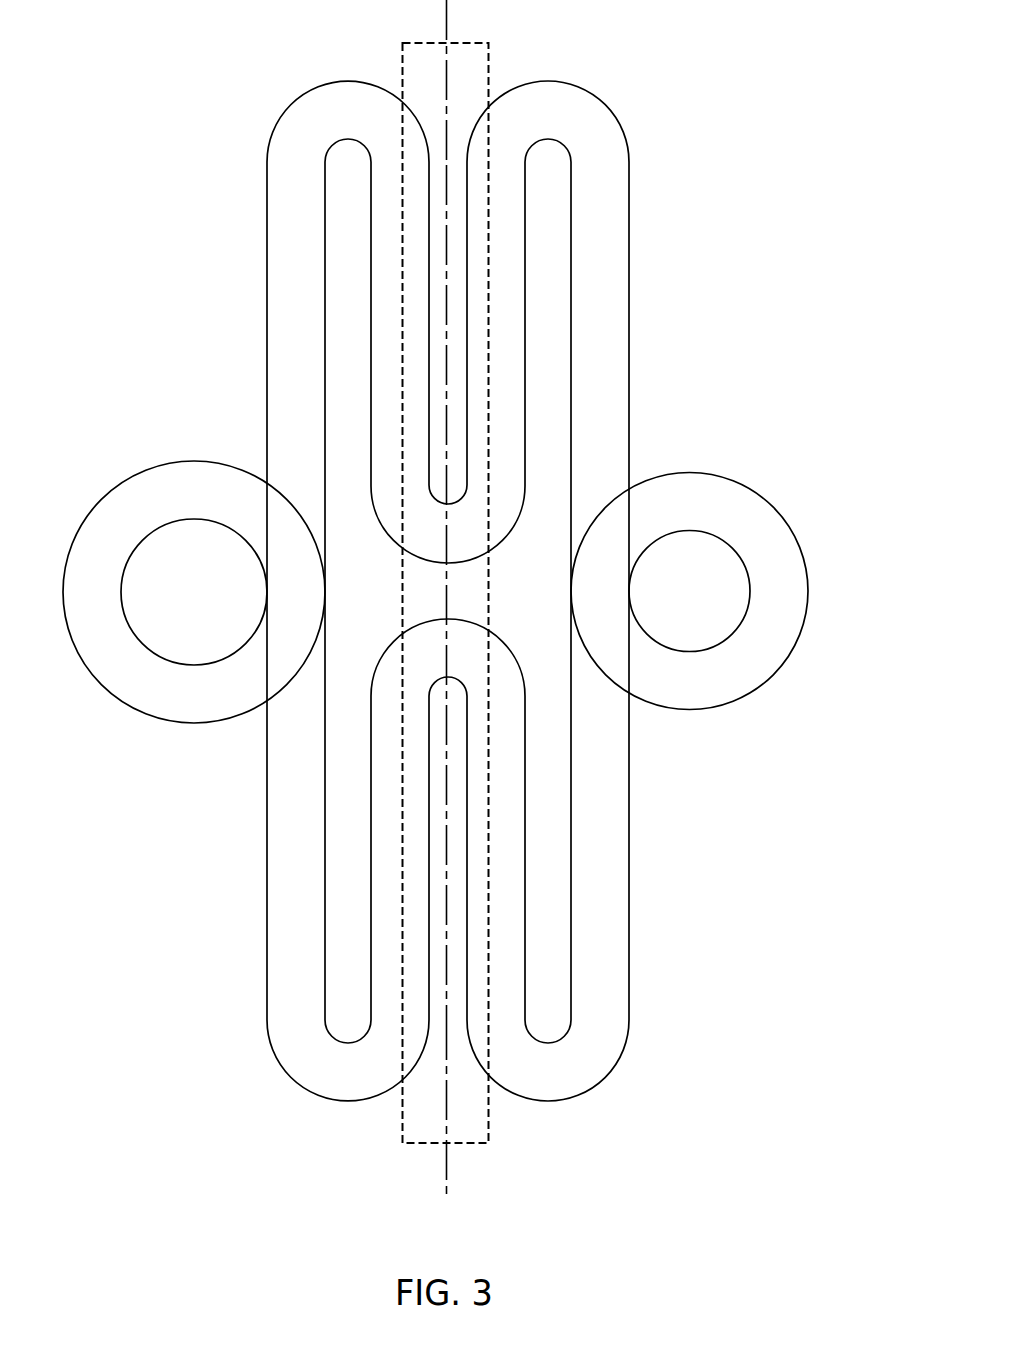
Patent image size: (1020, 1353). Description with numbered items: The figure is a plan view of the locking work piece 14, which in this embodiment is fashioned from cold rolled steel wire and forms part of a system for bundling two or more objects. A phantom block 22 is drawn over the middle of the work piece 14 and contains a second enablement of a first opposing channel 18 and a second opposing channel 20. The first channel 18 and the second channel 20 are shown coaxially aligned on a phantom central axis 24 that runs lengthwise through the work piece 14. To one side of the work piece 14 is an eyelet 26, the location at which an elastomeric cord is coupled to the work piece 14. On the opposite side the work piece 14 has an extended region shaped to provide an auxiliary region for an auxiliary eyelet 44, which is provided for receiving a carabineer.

The locking work piece 14 is at (643, 442).
The first opposing channel 18 is at (455, 312).
The second opposing channel 20 is at (459, 1057).
The phantom block 22 is at (491, 62).
The phantom central axis 24 is at (446, 90).
The eyelet 26 is at (682, 603).
The auxiliary eyelet 44 is at (178, 603).